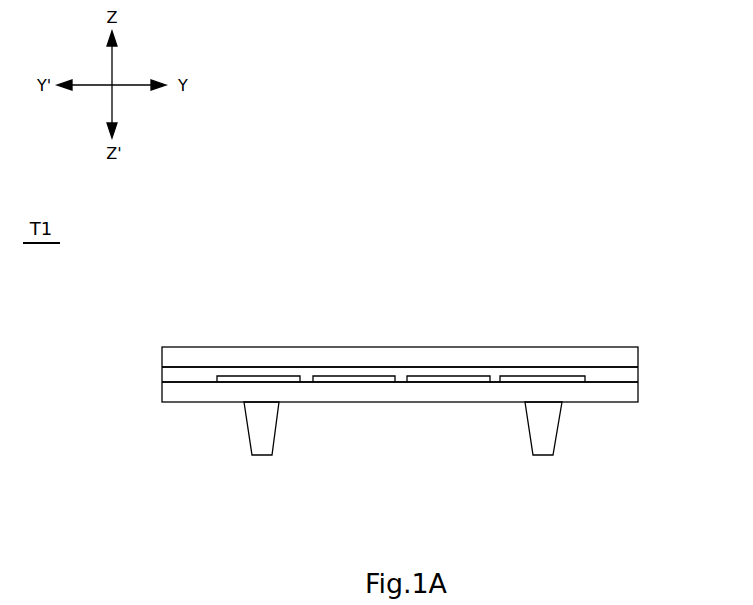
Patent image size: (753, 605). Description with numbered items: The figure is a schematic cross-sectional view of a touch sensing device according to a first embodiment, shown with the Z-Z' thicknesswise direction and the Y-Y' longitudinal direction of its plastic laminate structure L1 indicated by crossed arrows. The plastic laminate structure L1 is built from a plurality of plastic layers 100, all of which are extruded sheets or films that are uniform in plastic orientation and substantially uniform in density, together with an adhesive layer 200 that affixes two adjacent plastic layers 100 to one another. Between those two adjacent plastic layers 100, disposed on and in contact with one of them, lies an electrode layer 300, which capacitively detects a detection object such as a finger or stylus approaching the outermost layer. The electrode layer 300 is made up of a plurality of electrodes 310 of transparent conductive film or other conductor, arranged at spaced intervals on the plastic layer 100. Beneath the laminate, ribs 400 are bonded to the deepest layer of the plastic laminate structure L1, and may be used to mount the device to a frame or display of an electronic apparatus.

The plastic laminate structure L1 is at (153, 365).
The plastic layer 100 is at (625, 357).
The adhesive layer 200 is at (188, 372).
The electrode layer 300 is at (590, 378).
The electrode 310 is at (260, 377).
The rib 400 is at (262, 443).